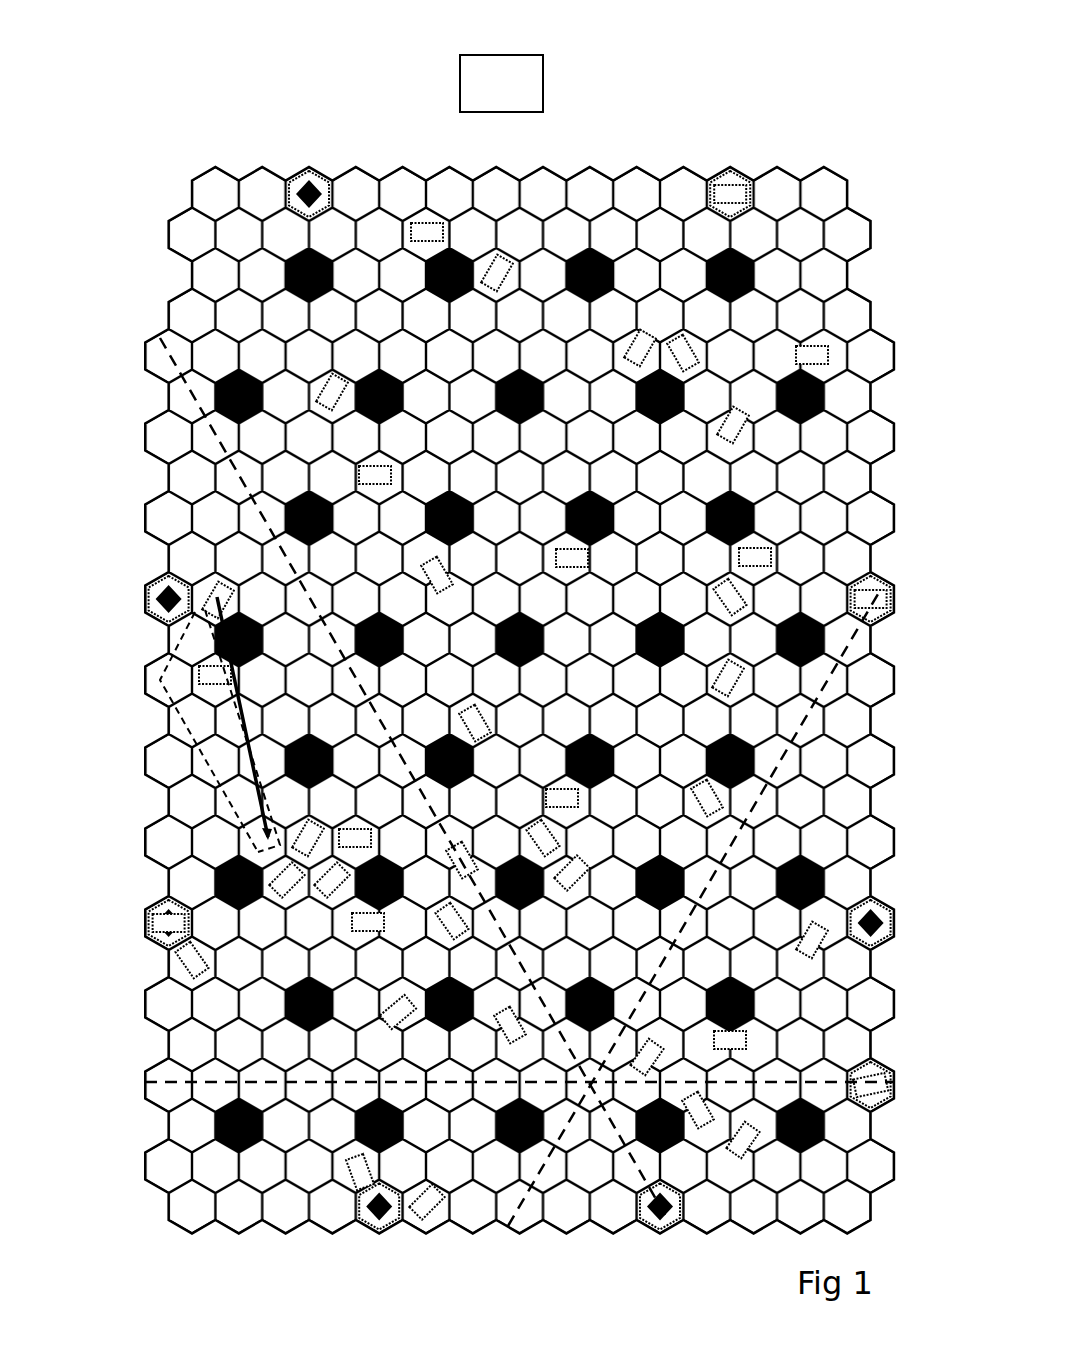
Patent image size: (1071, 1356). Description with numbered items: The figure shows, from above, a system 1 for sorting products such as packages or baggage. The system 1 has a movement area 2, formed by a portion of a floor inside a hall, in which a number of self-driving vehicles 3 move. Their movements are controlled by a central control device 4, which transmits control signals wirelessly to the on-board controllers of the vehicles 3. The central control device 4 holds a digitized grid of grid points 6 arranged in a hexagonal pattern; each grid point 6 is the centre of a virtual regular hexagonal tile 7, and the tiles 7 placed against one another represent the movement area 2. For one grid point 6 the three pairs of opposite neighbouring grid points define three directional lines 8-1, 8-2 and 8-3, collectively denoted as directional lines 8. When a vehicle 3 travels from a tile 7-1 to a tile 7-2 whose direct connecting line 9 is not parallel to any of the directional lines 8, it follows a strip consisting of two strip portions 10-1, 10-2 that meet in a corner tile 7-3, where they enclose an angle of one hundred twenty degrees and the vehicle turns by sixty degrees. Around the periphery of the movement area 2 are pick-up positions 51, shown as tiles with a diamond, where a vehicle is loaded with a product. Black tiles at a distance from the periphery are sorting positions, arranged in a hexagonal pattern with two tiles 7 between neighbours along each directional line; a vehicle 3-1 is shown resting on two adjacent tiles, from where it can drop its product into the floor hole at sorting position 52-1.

The system 1 is at (881, 111).
The movement area 2 is at (181, 132).
The self-driving vehicle 3 is at (730, 186).
The vehicle 3-1 is at (748, 1040).
The central control device 4 is at (528, 80).
The grid point 6 is at (591, 1093).
The hexagonal tile 7 is at (403, 188).
The tile 7-1 is at (192, 598).
The tile 7-2 is at (255, 850).
The corner tile 7-3 is at (192, 690).
The directional lines 8 is at (515, 778).
The first directional line 8-1 is at (523, 1200).
The second directional line 8-2 is at (185, 390).
The third directional line 8-3 is at (825, 1085).
The direct connecting line 9 is at (250, 793).
The first strip portion 10-1 is at (190, 645).
The second strip portion 10-2 is at (240, 775).
The pick-up position 51 is at (317, 178).
The sorting position 52-1 is at (748, 1004).